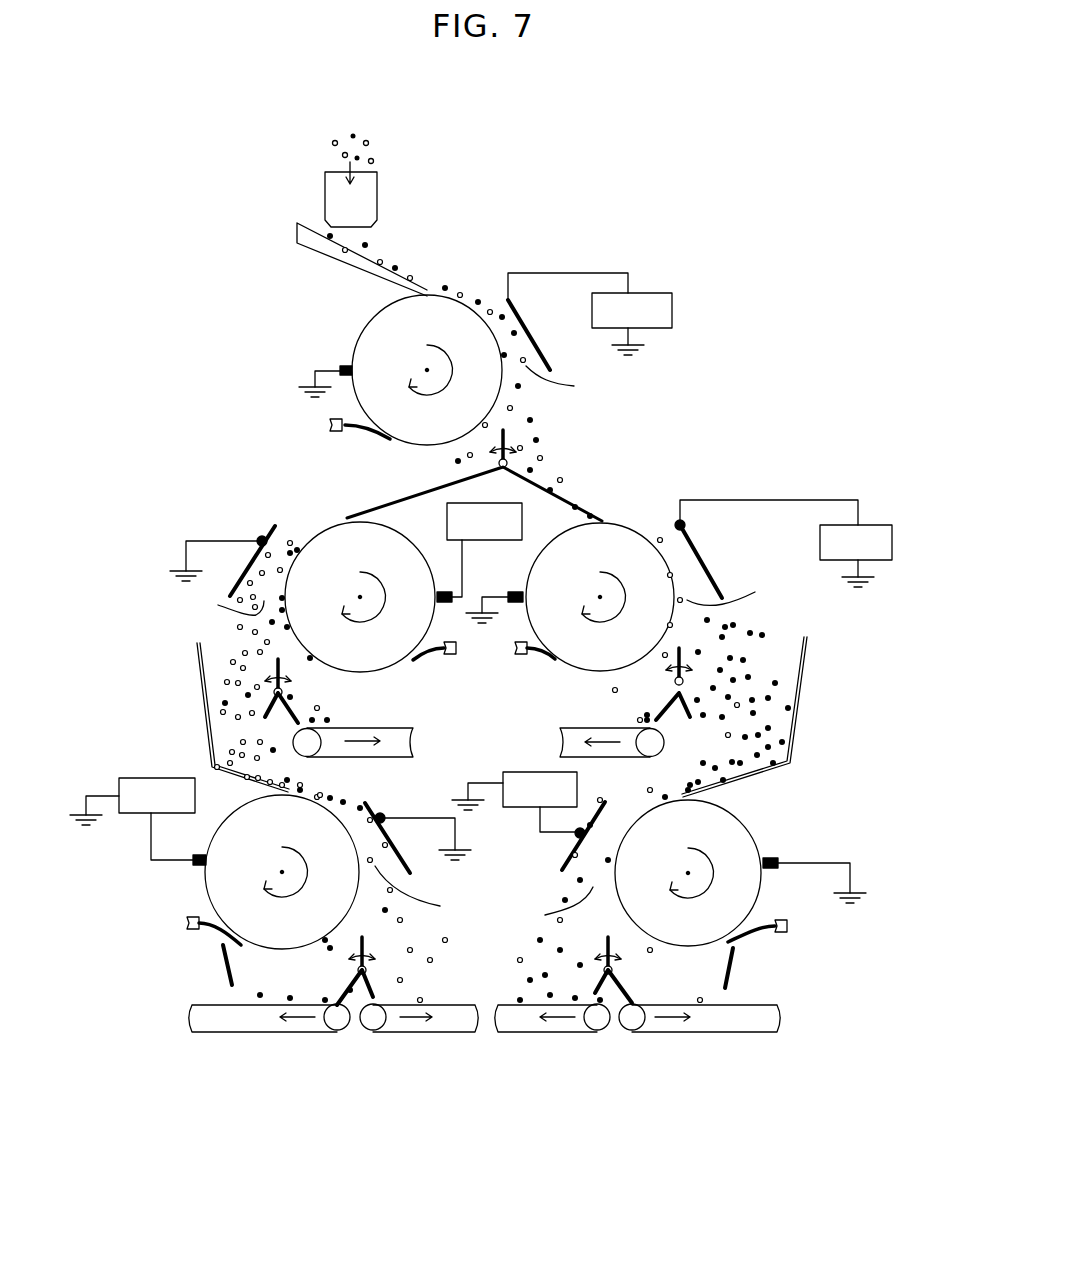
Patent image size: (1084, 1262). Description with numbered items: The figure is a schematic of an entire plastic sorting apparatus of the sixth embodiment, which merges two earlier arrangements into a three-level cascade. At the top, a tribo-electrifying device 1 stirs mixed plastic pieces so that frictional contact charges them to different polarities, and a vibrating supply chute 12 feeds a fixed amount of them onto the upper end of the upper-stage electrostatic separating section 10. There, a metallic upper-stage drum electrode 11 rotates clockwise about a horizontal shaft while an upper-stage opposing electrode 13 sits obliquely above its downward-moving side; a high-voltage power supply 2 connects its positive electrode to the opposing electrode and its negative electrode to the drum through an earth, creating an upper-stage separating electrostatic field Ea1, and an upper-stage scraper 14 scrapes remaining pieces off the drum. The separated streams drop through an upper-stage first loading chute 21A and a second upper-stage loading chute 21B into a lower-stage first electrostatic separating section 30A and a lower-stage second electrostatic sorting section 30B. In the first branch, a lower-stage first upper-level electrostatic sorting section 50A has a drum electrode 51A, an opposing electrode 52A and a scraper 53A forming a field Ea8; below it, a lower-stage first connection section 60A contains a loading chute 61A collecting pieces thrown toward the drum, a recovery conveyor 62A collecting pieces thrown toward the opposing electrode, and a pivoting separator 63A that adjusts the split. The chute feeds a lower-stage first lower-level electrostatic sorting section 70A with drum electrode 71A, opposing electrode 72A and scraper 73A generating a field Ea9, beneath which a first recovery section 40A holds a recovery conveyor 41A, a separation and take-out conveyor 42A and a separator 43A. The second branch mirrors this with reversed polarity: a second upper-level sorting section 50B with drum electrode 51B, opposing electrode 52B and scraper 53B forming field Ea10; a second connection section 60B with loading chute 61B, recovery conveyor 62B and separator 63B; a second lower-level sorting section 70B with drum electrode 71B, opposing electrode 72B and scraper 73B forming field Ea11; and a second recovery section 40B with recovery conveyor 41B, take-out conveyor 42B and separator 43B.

The tribo-electrifying device 1 is at (377, 188).
The high-voltage power supply 2 is at (658, 293).
The upper-stage electrostatic separating section 10 is at (440, 275).
The upper-stage drum electrode 11 is at (370, 331).
The supply chute 12 is at (340, 262).
The upper-stage opposing electrode 13 is at (535, 340).
The upper-stage scraper 14 is at (368, 437).
The upper-stage separating electrostatic field Ea1 is at (563, 388).
The upper-stage first loading chute 21A is at (424, 484).
The second upper-stage loading chute 21B is at (556, 492).
The lower-stage first electrostatic separating section 30A is at (200, 490).
The lower-stage second electrostatic sorting section 30B is at (676, 458).
The lower-stage first upper-level electrostatic sorting section 50A is at (312, 508).
The lower-stage second upper-level electrostatic sorting section 50B is at (630, 498).
The lower-stage first upper-level drum electrode 51A is at (380, 562).
The lower-stage second upper-level drum electrode 51B is at (620, 562).
The lower-stage first upper-level opposing electrode 52A is at (262, 535).
The lower-stage second upper-level opposing electrode 52B is at (700, 562).
The lower-stage first upper-level scraper 53A is at (427, 650).
The lower-stage second upper-level scraper 53B is at (538, 660).
The lower-stage first upper-level sorting electrostatic field Ea8 is at (222, 604).
The lower-stage upper-level separating electrostatic field Ea10 is at (740, 587).
The lower-stage first connection section 60A is at (222, 646).
The second lower-stage connection section 60B is at (782, 645).
The lower-stage first loading chute 61A is at (203, 728).
The lower-stage second loading chute 61B is at (798, 689).
The lower-stage first recovery conveyor 62A is at (395, 728).
The lower-stage second recovery conveyor 62B is at (597, 729).
The lower-stage first separator 63A is at (268, 656).
The lower-stage second separator 63B is at (683, 650).
The lower-stage first lower-level electrostatic sorting section 70A is at (362, 793).
The lower-stage second lower-level electrostatic sorting section 70B is at (565, 890).
The lower-stage first lower-level drum electrode 71A is at (302, 837).
The lower-stage second lower-level drum electrode 71B is at (708, 837).
The lower-stage first lower-level opposing electrode 72A is at (402, 850).
The lower-stage second lower-level opposing electrode 72B is at (578, 851).
The lower-stage first lower-level scraper 73A is at (222, 961).
The lower-stage second lower-level scraper 73B is at (750, 935).
The lower-stage first lower-level sorting electrostatic field Ea9 is at (425, 891).
The lower-stage second lower-level sorting electrostatic field Ea11 is at (545, 908).
The first recovery section 40A is at (358, 1038).
The second recovery section 40B is at (613, 1040).
The lower-stage first recovery conveyor 41A is at (260, 1032).
The lower-stage second recovery conveyor 41B is at (722, 1032).
The first separation and take-out conveyor 42A is at (427, 1032).
The second separation and take-out conveyor 42B is at (565, 1032).
The lower-stage first separator 43A is at (358, 962).
The lower-stage second separator 43B is at (613, 962).